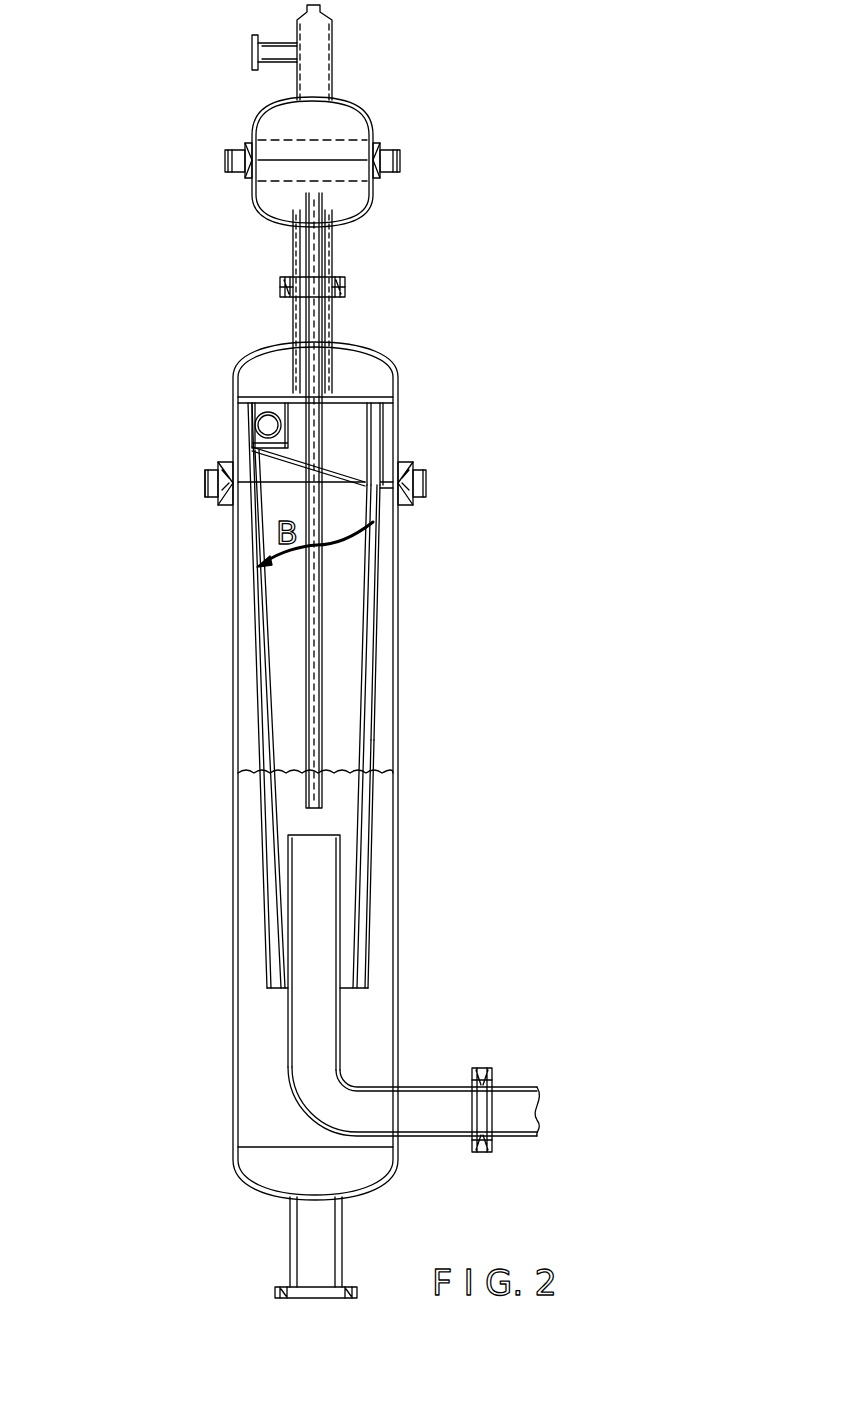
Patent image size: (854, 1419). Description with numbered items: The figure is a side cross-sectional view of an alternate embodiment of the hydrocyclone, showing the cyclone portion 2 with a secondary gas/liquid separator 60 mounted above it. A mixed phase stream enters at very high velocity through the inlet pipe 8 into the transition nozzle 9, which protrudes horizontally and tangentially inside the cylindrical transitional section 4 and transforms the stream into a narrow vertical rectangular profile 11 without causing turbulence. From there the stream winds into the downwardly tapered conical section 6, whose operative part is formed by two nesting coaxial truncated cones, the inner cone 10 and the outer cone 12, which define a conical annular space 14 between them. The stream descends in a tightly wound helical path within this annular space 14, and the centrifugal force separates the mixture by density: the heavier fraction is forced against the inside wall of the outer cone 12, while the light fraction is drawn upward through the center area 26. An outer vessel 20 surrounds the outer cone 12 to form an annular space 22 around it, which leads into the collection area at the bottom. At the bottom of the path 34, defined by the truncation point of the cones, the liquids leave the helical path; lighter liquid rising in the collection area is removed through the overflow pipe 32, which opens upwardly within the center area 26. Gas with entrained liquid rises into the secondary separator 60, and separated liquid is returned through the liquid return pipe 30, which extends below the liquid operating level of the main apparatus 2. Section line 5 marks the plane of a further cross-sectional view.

The cyclone portion 2 is at (95, 583).
The transitional section 4 is at (130, 395).
The section line 5- 5 is at (422, 916).
The conical section 6 is at (130, 483).
The inlet pipe 8 is at (257, 415).
The transition nozzle 9 is at (290, 393).
The inner cone 10 is at (360, 560).
The rectangular profile 11 is at (247, 447).
The outer cone 12 is at (380, 593).
The conical annular space 14 is at (378, 700).
The outer vessel 20 is at (397, 865).
The annular space 22 is at (375, 960).
The center area 26 is at (335, 770).
The liquid return pipe 30 is at (307, 698).
The overflow pipe 32 is at (307, 845).
The bottom of the path 34 is at (362, 988).
The secondary gas/liquid separator 60 is at (377, 125).